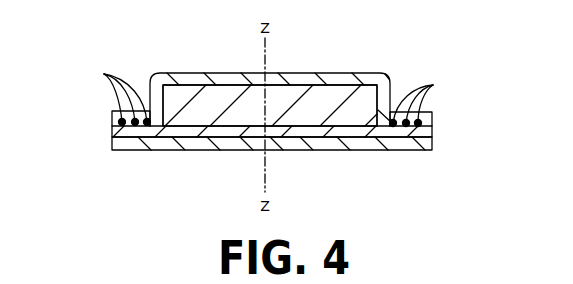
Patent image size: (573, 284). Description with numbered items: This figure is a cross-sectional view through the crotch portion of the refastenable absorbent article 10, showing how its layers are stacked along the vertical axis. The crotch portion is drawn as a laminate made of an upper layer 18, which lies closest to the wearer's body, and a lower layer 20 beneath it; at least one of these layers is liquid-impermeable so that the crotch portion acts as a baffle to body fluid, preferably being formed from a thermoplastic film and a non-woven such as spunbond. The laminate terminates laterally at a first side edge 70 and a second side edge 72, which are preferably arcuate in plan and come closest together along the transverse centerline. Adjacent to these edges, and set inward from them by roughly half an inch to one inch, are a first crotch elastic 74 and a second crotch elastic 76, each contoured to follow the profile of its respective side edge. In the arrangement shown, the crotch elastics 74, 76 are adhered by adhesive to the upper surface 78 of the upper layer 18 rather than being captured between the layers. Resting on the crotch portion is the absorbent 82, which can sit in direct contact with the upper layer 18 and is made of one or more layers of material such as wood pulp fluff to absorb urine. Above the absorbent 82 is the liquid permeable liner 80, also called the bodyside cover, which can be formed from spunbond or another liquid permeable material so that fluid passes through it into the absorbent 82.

The refastenable absorbent article 10 is at (482, 60).
The upper layer 18 is at (182, 130).
The lower layer 20 is at (230, 137).
The first side edge 70 is at (112, 134).
The second side edge 72 is at (433, 130).
The first crotch elastic 74 is at (104, 74).
The second crotch elastic 76 is at (433, 85).
The upper surface 78 is at (285, 104).
The liquid permeable liner 80 is at (301, 73).
The absorbent 82 is at (341, 92).